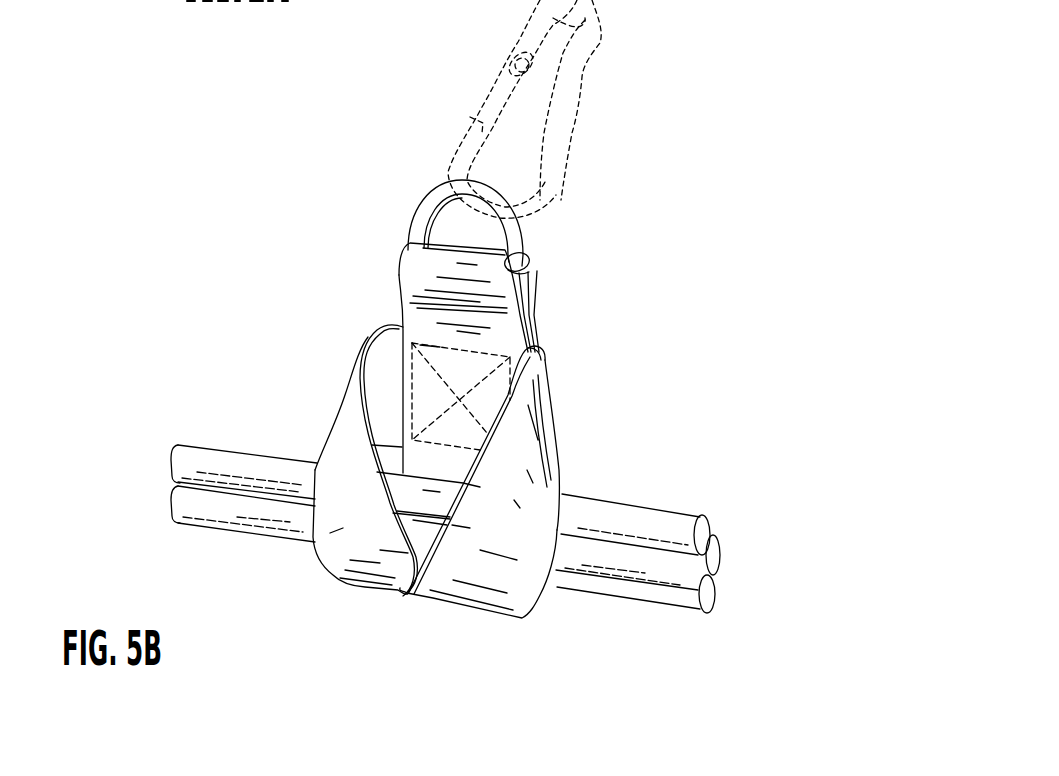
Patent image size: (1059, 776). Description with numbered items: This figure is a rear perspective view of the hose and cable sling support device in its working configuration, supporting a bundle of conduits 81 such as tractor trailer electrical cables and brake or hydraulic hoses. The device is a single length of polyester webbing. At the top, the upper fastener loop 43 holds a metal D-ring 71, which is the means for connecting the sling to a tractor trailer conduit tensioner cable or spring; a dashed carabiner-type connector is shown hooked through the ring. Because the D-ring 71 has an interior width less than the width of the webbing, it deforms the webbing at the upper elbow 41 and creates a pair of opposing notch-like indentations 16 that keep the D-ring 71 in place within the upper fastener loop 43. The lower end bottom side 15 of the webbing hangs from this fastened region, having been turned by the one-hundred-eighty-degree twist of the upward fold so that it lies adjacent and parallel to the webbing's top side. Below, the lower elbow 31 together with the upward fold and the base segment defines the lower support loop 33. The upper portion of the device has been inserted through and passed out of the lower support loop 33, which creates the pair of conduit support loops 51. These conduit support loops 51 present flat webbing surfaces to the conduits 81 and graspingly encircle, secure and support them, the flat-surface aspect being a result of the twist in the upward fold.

The lower end bottom side 15 is at (532, 289).
The pair of opposing notch-like indentations 16 is at (483, 233).
The lower elbow 31 is at (512, 463).
The lower support loop 33 is at (343, 446).
The upper elbow 41 is at (450, 302).
The upper fastener loop 43 is at (590, 293).
The pair of conduit support loops 51 is at (422, 572).
The metal D-ring 71 is at (523, 228).
The conduits 81 is at (467, 557).